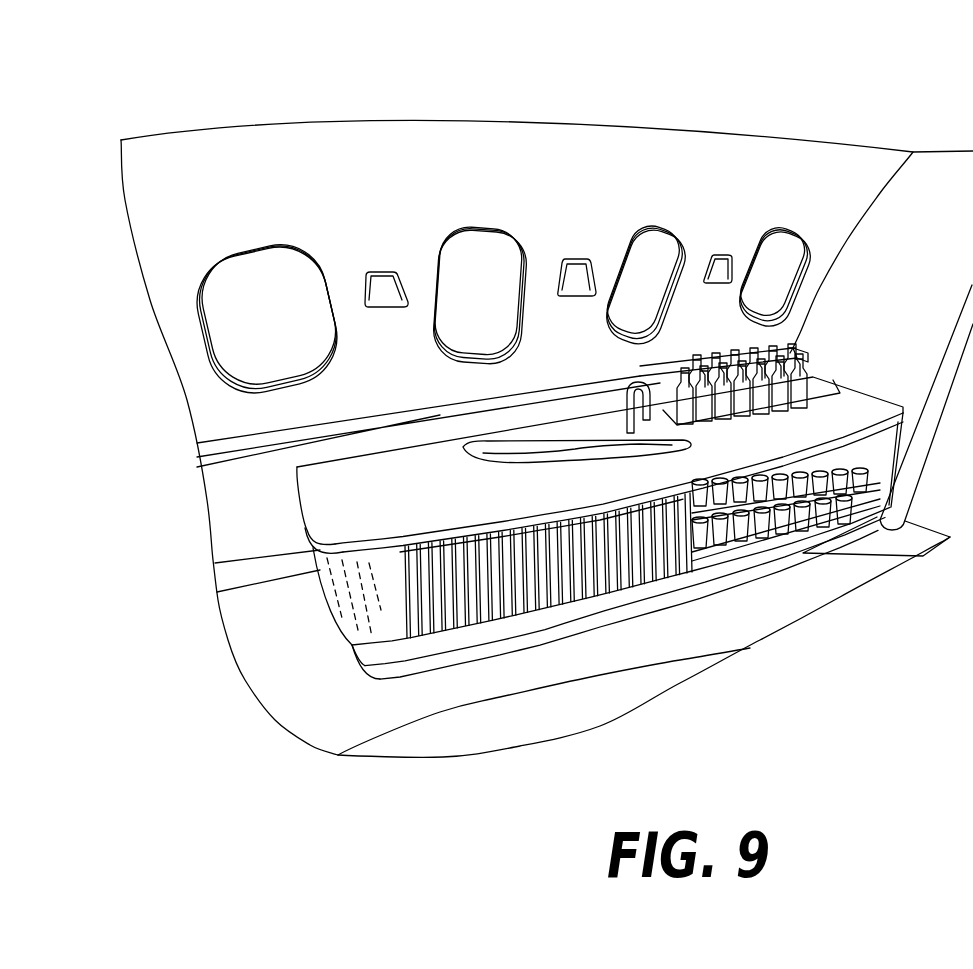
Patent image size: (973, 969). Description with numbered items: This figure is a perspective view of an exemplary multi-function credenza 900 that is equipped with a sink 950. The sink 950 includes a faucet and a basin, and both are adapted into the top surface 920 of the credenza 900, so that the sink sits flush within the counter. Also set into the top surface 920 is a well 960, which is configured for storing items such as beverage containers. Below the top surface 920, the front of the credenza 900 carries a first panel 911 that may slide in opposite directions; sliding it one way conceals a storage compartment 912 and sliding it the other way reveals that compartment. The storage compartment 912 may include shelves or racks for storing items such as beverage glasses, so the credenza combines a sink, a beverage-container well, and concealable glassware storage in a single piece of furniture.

The multi-function credenza 900 is at (203, 75).
The first panel 911 is at (476, 578).
The storage compartment 912 is at (813, 512).
The top surface 920 is at (322, 481).
The sink 950 is at (557, 412).
The well 960 is at (750, 360).